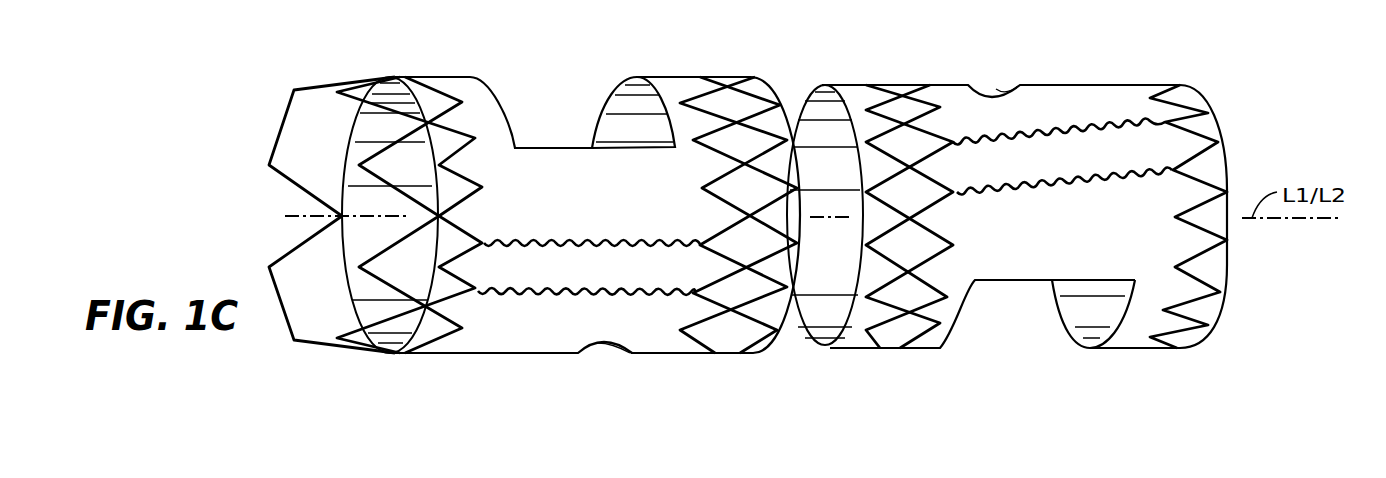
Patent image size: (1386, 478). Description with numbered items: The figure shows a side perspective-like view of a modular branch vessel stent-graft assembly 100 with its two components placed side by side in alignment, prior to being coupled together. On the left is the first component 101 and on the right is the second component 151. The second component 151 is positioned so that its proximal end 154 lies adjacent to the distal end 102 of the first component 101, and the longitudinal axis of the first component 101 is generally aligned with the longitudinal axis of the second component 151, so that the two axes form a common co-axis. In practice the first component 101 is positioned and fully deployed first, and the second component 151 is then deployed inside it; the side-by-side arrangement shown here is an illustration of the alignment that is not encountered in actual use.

The modular branch vessel stent-graft assembly 100 is at (882, 62).
The first component 101 is at (527, 362).
The distal end 102 is at (756, 355).
The second component 151 is at (1048, 80).
The proximal end 154 is at (800, 317).